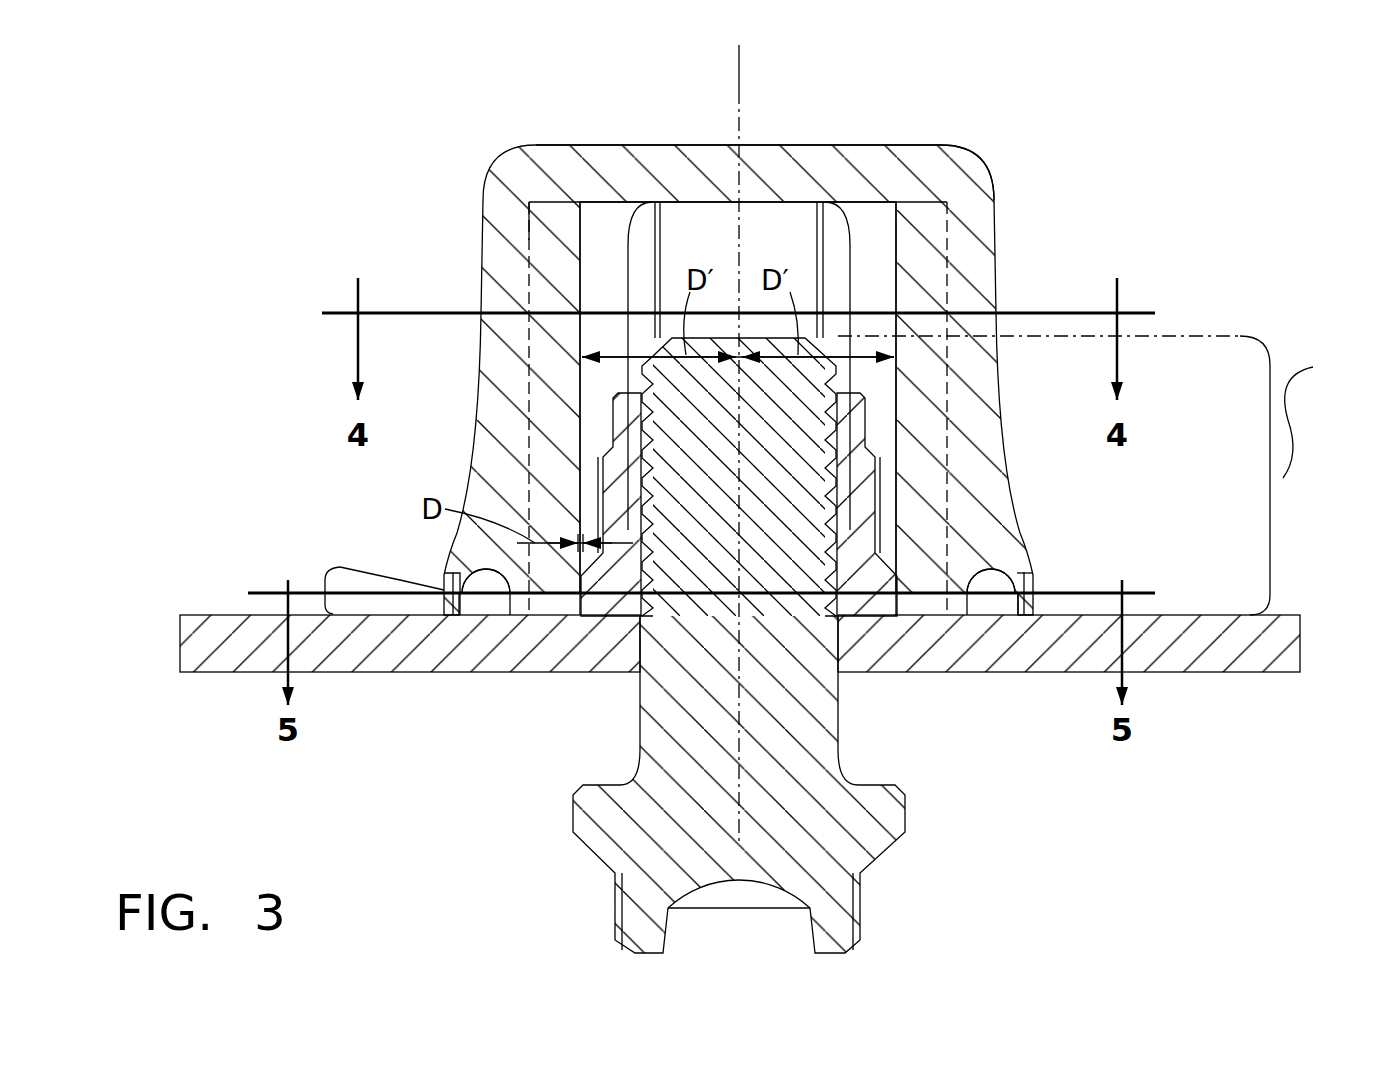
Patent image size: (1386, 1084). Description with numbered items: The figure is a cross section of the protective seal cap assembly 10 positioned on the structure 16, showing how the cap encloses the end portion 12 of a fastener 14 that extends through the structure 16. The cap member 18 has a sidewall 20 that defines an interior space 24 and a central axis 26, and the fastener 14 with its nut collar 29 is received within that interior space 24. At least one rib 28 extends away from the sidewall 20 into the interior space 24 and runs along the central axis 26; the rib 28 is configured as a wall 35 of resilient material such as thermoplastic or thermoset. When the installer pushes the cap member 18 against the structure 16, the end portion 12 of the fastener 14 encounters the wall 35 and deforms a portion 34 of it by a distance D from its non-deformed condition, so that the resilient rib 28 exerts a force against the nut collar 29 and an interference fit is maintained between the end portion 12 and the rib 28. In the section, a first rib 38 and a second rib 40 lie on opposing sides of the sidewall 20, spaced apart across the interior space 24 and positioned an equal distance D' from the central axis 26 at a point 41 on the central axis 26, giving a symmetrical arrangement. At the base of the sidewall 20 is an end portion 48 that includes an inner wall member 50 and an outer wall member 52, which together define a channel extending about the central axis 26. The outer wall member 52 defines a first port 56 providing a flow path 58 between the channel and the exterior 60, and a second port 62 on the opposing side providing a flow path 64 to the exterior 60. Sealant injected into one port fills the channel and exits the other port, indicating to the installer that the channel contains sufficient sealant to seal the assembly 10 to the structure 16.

The protective seal cap assembly 10 is at (957, 120).
The end portion 12 is at (1313, 368).
The fastener 14 is at (775, 795).
The structure 16 is at (235, 613).
The cap member 18 is at (482, 248).
The sidewall 20 is at (508, 427).
The interior space 24 is at (738, 223).
The central axis 26 is at (739, 90).
The rib 28 is at (563, 227).
The nut collar 29 is at (622, 463).
The portion 34 is at (585, 598).
The wall 35 is at (543, 287).
The first rib 38 is at (915, 402).
The second rib 40 is at (535, 372).
The point 41 is at (742, 330).
The end portion 48 is at (322, 572).
The inner wall member 50 is at (573, 614).
The outer wall member 52 is at (445, 585).
The first port 56 is at (1040, 576).
The flow path 58 is at (1015, 607).
The exterior 60 is at (400, 587).
The second port 62 is at (447, 604).
The flow path 64 is at (400, 570).